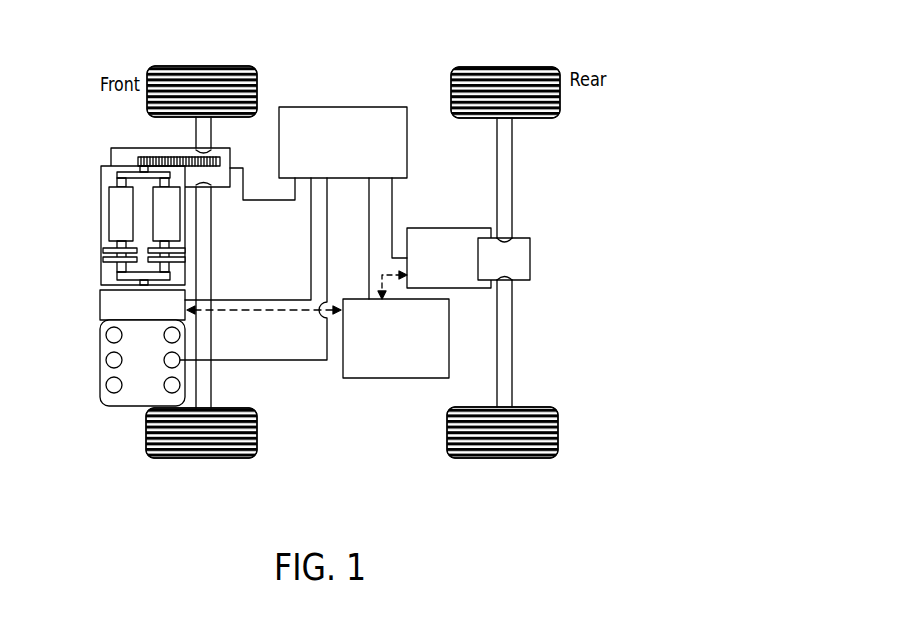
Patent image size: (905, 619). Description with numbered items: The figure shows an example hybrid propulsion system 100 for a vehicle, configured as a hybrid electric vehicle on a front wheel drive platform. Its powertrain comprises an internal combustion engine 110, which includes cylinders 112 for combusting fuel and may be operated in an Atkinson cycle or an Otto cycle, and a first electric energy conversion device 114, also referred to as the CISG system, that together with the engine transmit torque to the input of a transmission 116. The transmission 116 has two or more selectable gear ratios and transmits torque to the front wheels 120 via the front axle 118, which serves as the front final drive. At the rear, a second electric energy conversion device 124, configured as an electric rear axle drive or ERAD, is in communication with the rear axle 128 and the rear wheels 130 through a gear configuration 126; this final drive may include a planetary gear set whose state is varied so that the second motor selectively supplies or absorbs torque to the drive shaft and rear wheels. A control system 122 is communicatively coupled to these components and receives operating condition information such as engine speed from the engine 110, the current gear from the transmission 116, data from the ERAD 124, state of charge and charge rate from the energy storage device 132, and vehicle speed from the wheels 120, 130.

The hybrid propulsion system 100 is at (612, 36).
The internal combustion engine 110 is at (117, 363).
The cylinders 112 is at (100, 378).
The first electric energy conversion device 114 is at (100, 305).
The transmission 116 is at (100, 236).
The front axle 118 is at (196, 142).
The front wheels 120 is at (212, 65).
The control system 122 is at (407, 150).
The second electric energy conversion device 124 is at (452, 228).
The gear configuration 126 is at (530, 252).
The rear axle 128 is at (512, 182).
The rear wheels 130 is at (503, 66).
The energy storage device 132 is at (397, 378).